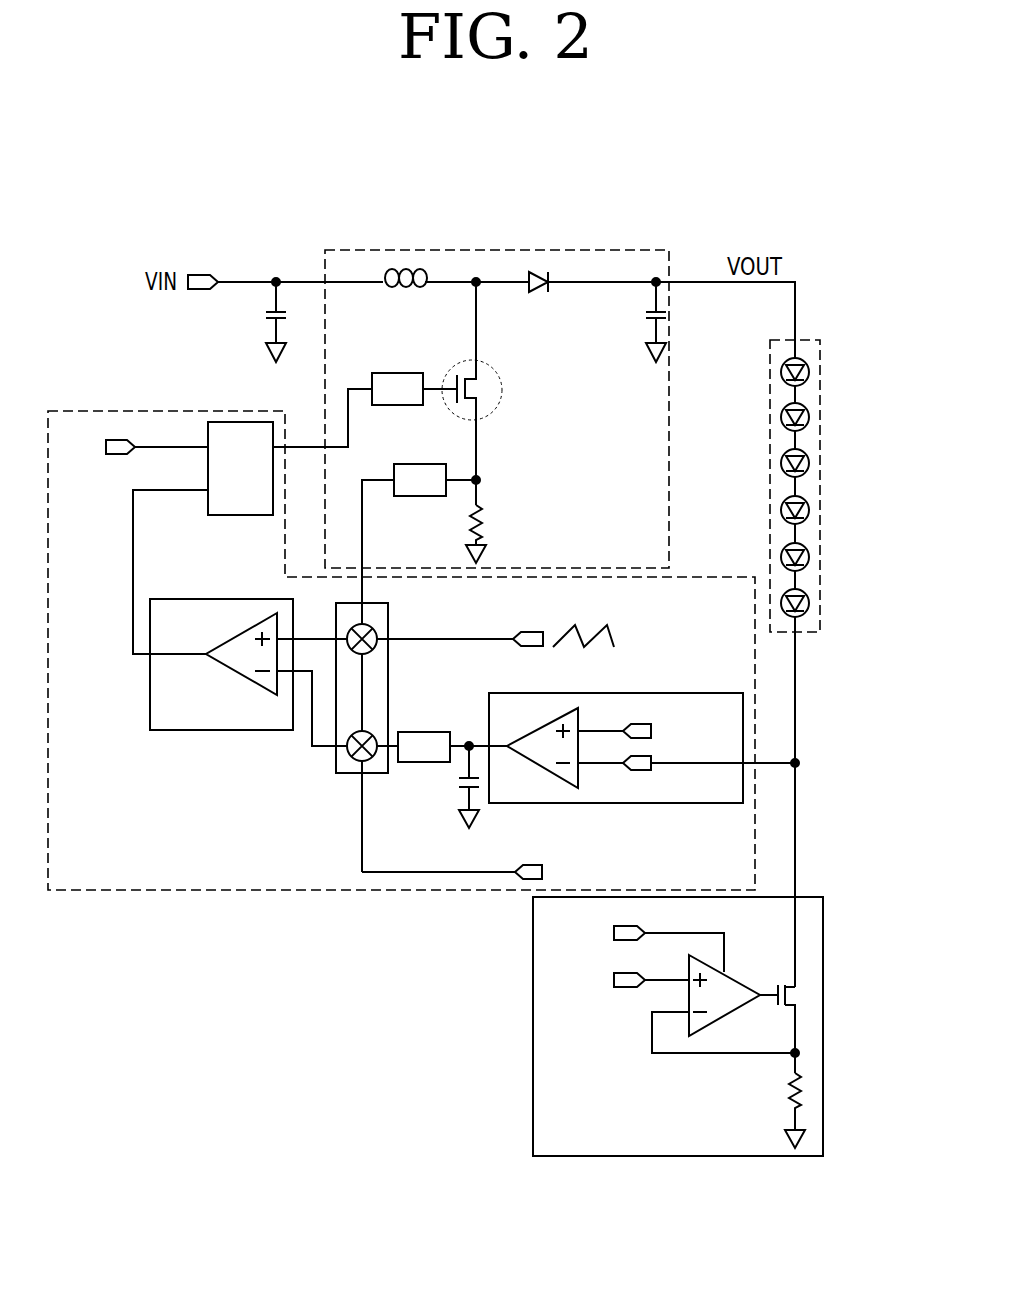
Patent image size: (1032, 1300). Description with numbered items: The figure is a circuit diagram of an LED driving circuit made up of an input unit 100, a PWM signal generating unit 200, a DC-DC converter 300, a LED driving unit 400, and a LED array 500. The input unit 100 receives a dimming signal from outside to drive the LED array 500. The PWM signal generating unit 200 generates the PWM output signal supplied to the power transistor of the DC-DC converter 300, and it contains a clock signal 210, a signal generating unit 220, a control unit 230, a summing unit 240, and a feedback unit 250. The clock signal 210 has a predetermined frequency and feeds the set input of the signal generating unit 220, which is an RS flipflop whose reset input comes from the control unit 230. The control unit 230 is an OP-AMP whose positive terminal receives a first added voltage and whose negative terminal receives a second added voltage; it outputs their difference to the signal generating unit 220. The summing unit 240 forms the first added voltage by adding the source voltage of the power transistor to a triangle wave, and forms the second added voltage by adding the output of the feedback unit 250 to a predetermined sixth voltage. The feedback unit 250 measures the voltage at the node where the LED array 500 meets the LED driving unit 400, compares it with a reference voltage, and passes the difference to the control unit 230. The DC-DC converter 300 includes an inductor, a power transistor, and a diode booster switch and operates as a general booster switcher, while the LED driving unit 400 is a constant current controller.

The input unit 100 is at (623, 921).
The PWM signal generating unit 200 is at (153, 411).
The clock signal 210 is at (118, 456).
The signal generating unit 220 is at (233, 516).
The control unit 230 is at (213, 731).
The summing unit 240 is at (335, 760).
The feedback unit 250 is at (694, 693).
The DC-DC converter 300 is at (608, 250).
The LED driving unit 400 is at (823, 933).
The LED array 500 is at (820, 347).